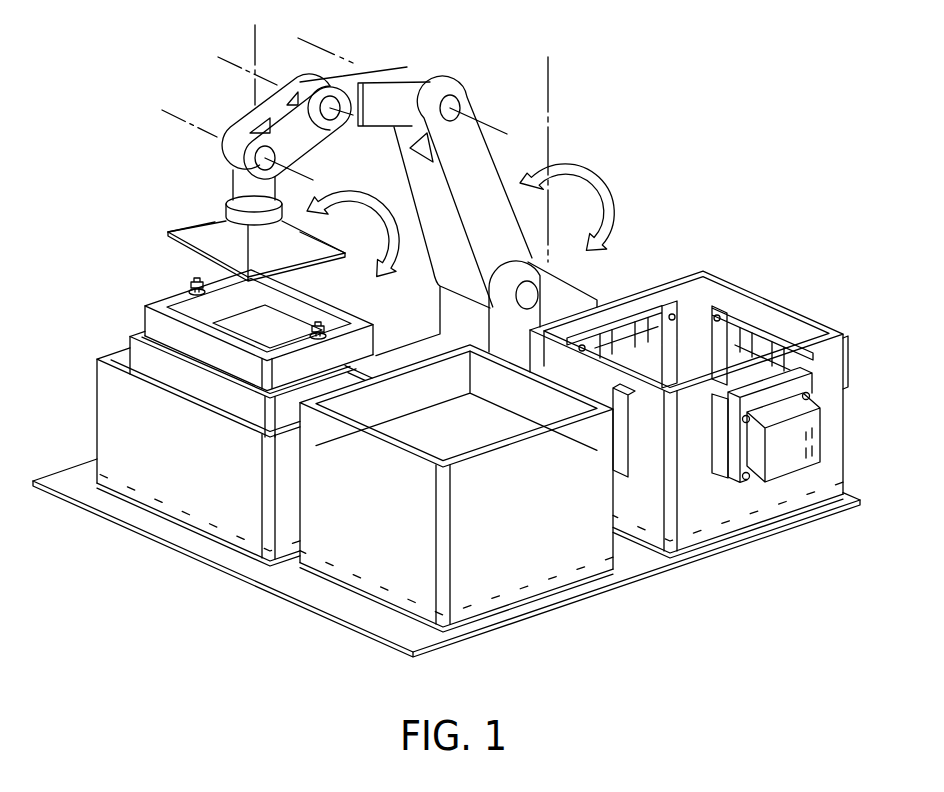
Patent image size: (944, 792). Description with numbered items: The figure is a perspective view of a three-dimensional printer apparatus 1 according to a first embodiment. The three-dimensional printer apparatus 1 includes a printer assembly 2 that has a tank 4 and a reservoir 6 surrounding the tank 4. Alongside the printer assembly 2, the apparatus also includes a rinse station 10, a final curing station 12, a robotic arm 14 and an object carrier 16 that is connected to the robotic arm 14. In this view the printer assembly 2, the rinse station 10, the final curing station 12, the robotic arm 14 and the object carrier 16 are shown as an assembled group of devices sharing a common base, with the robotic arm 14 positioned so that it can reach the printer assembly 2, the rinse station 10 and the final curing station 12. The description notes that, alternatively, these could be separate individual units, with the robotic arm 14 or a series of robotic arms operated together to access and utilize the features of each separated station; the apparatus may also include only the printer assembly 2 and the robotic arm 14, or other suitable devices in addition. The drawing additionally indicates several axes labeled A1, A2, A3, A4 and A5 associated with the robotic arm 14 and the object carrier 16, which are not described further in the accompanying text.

The three-dimensional printer apparatus 1 is at (720, 129).
The printer assembly 2 is at (167, 287).
The tank 4 is at (222, 398).
The reservoir 6 is at (142, 430).
The rinse station 10 is at (553, 548).
The final curing station 12 is at (776, 298).
The robotic arm 14 is at (505, 166).
The object carrier 16 is at (297, 250).
The axis A1 is at (549, 78).
The axis A2 is at (491, 125).
The axis A3 is at (230, 62).
The axis A4 is at (172, 118).
The axis A5 is at (255, 38).